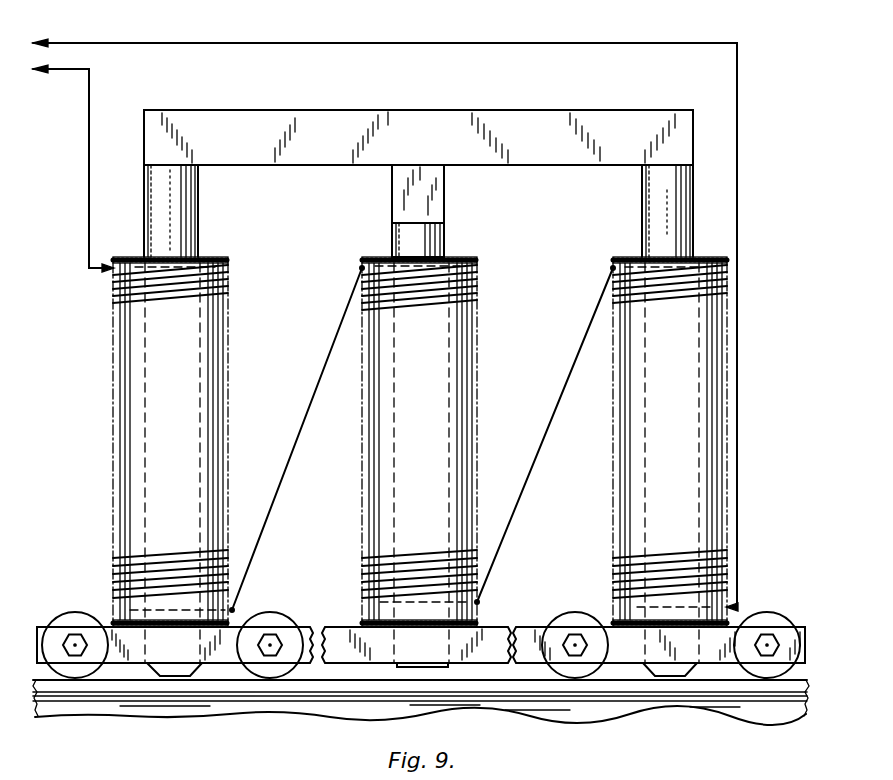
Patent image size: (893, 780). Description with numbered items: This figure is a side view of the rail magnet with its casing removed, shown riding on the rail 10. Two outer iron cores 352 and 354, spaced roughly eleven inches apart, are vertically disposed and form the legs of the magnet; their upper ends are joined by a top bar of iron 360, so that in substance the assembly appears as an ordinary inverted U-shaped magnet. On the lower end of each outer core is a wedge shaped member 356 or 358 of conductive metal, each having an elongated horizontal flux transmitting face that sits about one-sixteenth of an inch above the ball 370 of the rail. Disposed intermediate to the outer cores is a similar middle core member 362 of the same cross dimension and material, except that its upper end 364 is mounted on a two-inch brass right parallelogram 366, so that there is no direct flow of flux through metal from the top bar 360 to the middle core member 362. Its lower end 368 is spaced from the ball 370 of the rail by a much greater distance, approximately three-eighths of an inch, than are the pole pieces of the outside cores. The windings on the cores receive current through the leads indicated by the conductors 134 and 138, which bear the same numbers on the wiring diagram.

The rail 10 is at (45, 684).
The conductor 134 is at (62, 75).
The conductor 138 is at (146, 42).
The iron core 352 is at (150, 413).
The iron core 354 is at (690, 428).
The wedge shaped member 356 is at (173, 670).
The wedge shaped member 358 is at (677, 670).
The top bar of iron 360 is at (253, 128).
The middle core member 362 is at (442, 366).
The upper end of middle core member 364 is at (398, 236).
The brass right parallelogram 366 is at (400, 193).
The lower end of middle core member 368 is at (400, 668).
The ball of the rail 370 is at (598, 690).